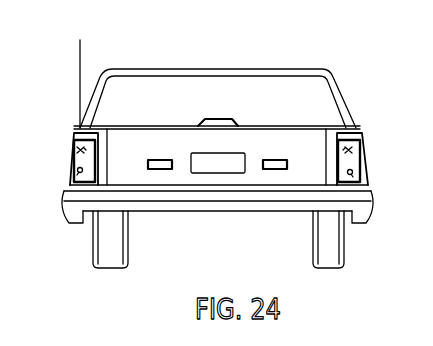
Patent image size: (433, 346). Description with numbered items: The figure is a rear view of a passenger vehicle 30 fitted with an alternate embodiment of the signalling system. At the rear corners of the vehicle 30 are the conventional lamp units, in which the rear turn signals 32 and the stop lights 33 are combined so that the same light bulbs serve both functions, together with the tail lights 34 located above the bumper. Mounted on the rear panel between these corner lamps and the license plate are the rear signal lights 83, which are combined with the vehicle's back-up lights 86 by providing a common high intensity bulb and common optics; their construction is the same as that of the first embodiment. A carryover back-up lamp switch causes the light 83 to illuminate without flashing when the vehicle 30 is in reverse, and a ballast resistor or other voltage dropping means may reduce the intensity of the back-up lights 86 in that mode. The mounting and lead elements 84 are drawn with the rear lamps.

The passenger vehicle 30 is at (225, 69).
The rear turn signals 32 is at (72, 148).
The stop lights 33 is at (73, 161).
The tail lights 34 is at (63, 192).
The rear signal lights 83 is at (165, 170).
The rear sensor unit 84 is at (162, 170).
The back-up lights 86 is at (161, 160).